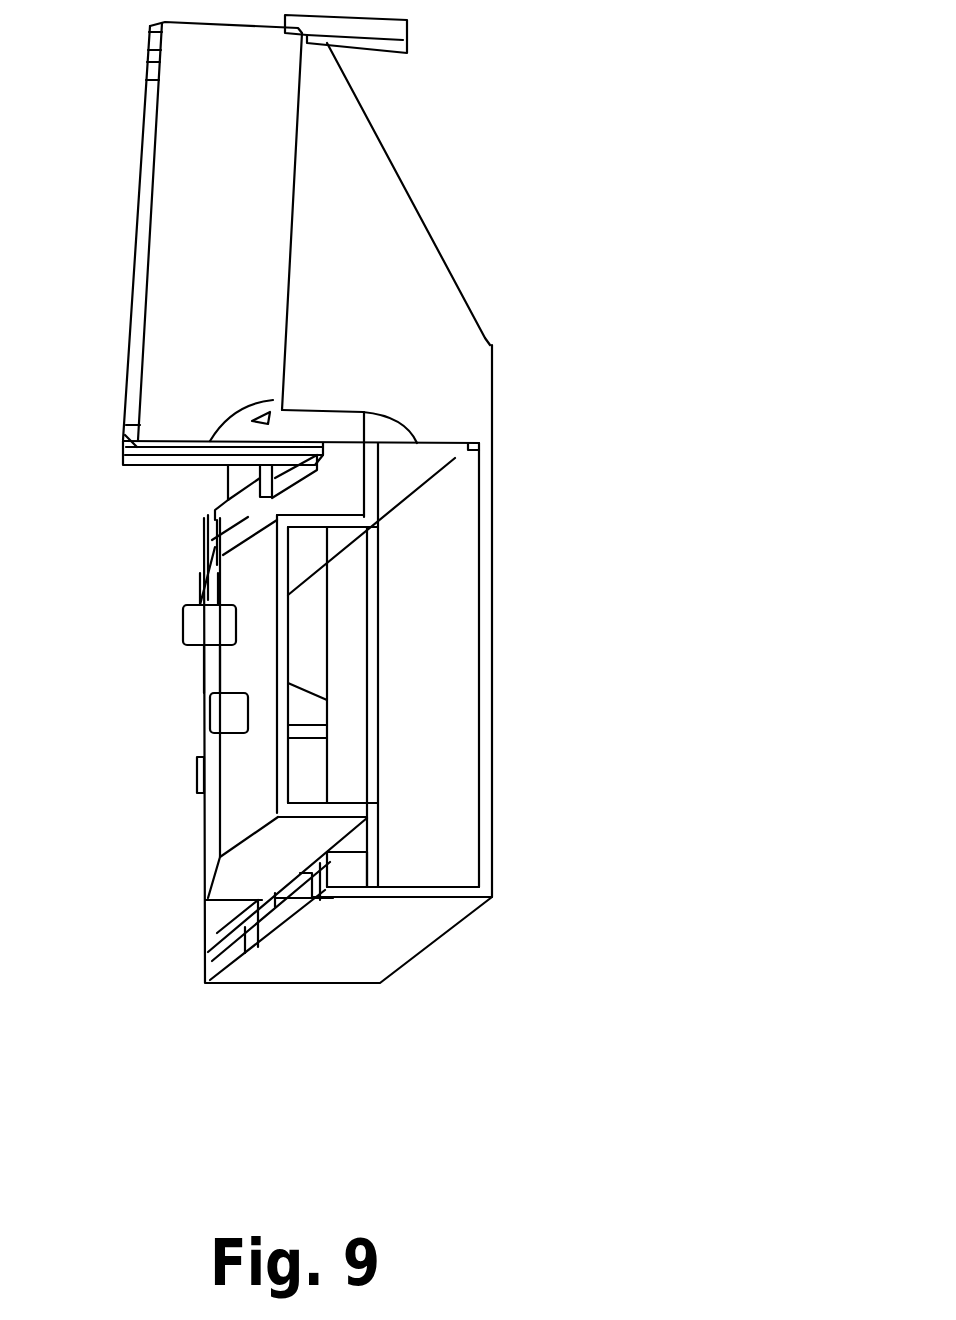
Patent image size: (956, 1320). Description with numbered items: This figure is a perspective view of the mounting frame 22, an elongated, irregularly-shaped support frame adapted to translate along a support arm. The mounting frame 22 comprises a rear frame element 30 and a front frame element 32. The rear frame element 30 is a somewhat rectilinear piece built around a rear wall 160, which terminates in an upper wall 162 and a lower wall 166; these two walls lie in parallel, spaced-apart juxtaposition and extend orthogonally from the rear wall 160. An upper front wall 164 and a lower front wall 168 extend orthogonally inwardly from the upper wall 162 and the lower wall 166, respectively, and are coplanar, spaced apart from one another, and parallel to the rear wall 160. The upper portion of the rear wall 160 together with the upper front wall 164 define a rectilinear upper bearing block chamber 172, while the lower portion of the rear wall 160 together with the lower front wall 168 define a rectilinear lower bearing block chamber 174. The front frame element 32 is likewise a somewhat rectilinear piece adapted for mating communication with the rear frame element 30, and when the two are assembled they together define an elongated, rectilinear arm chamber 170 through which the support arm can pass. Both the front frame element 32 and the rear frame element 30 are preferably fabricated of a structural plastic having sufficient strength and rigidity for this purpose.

The mounting frame 22 is at (528, 552).
The rear frame element 30 is at (487, 753).
The front frame element 32 is at (240, 807).
The rear wall 160 is at (456, 713).
The upper wall 162 is at (430, 454).
The upper front wall 164 is at (375, 490).
The lower wall 166 is at (397, 927).
The lower front wall 168 is at (367, 853).
The arm chamber 170 is at (398, 659).
The upper bearing block chamber 172 is at (440, 501).
The lower bearing block chamber 174 is at (426, 874).